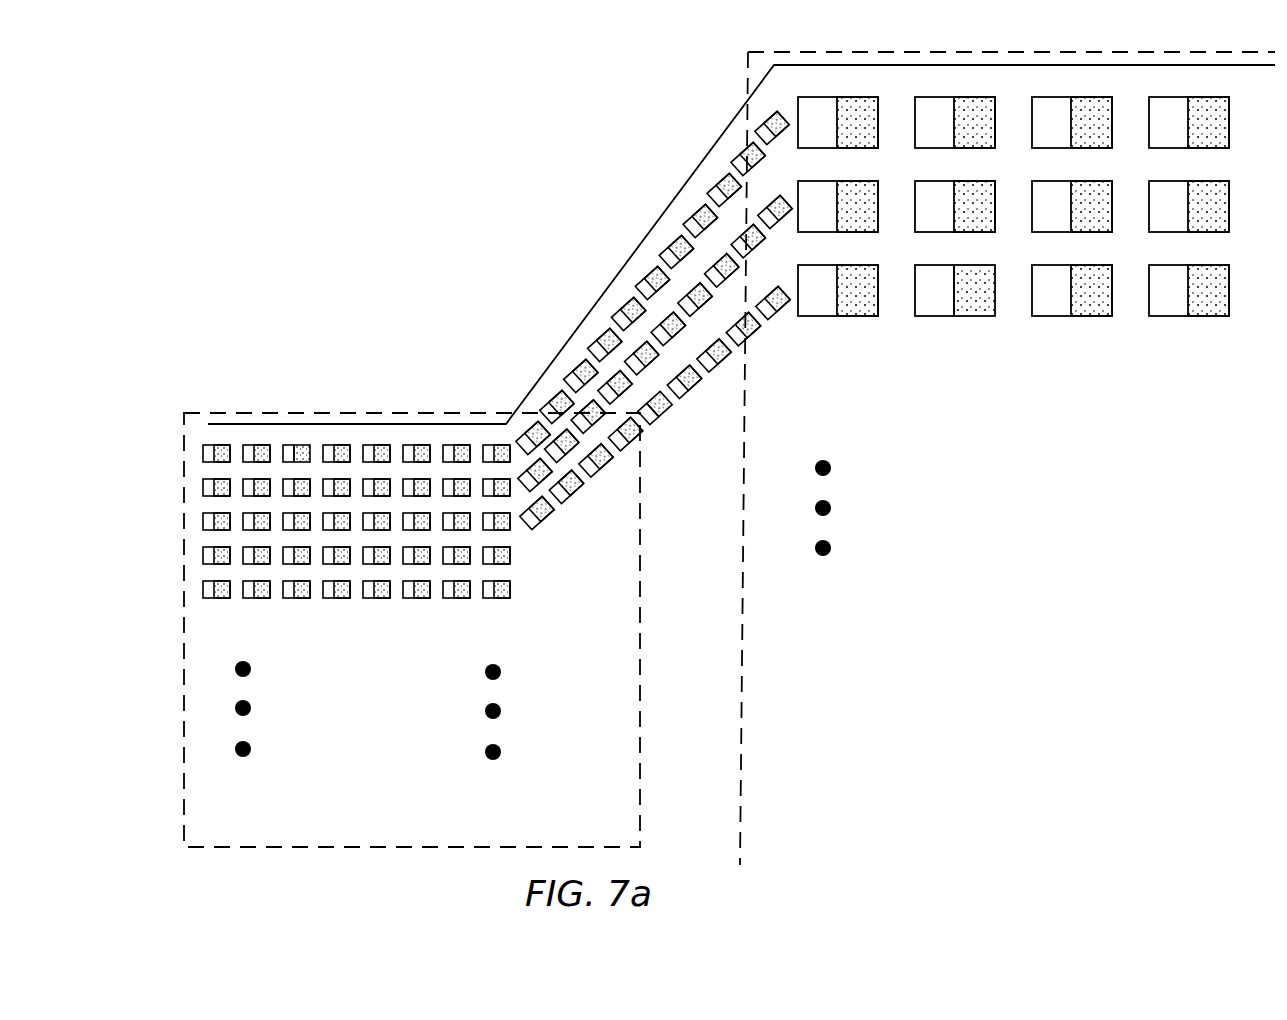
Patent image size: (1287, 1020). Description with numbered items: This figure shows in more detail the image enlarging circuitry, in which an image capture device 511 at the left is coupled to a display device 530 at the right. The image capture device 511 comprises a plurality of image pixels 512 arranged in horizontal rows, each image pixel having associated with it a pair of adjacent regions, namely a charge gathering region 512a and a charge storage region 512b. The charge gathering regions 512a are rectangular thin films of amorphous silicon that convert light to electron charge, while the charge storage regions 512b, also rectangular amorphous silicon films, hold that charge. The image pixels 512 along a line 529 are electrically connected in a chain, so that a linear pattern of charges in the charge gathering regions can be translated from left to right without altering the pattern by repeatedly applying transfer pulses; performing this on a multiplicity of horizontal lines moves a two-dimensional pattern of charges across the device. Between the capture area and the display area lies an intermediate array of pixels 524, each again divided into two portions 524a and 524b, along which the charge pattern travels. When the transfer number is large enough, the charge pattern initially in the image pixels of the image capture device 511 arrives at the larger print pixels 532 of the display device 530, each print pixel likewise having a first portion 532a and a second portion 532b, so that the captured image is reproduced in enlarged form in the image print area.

The image capture device 511 is at (642, 800).
The image pixels 512 is at (356, 468).
The charge gathering region 512a is at (290, 446).
The charge storage region 512b is at (306, 446).
The transition pixel array 524 is at (654, 327).
The transition sub-pixel portion 524a is at (653, 422).
The transition sub-pixel portion 524b is at (661, 417).
The line 529 is at (647, 235).
The display device 530 is at (742, 712).
The print pixels 532 is at (1013, 247).
The second pixel sub-portion 532a is at (935, 318).
The second pixel sub-portion 532b is at (972, 318).